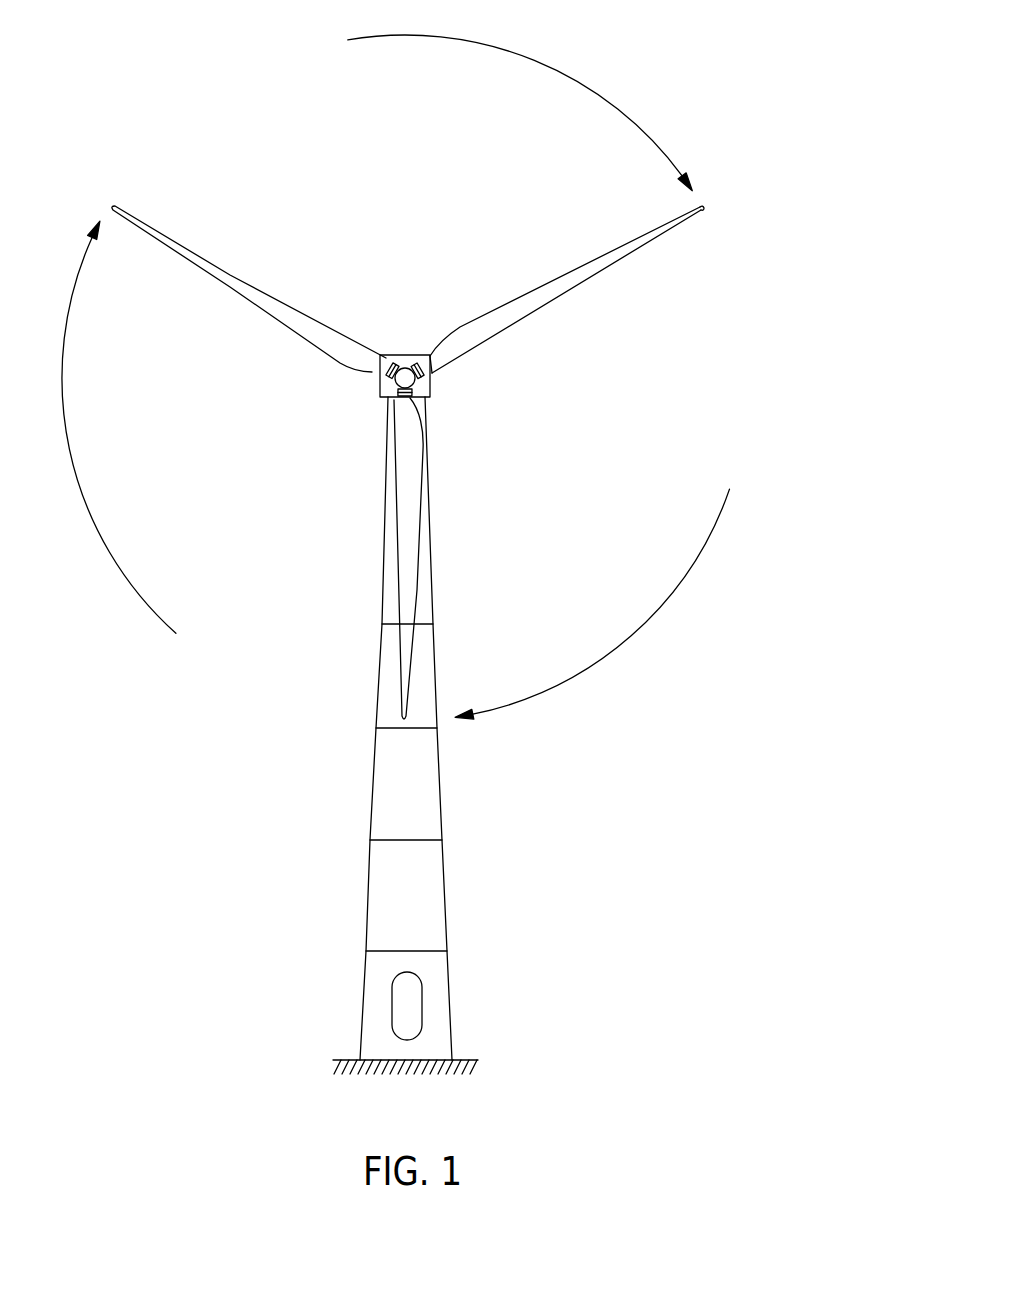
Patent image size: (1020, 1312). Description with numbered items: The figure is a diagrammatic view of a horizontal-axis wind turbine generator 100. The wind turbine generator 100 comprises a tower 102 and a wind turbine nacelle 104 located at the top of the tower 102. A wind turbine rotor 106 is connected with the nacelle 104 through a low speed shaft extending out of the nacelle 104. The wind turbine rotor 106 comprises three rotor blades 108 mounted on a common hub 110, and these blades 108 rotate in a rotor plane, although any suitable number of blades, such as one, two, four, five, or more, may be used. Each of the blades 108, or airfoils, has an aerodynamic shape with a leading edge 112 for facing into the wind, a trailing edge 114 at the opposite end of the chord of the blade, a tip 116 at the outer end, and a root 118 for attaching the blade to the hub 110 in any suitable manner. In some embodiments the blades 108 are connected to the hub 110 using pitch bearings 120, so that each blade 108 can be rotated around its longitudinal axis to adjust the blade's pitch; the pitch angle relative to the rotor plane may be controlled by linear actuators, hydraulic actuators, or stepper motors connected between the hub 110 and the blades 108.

The wind turbine generator 100 is at (328, 908).
The tower 102 is at (425, 790).
The wind turbine nacelle 104 is at (432, 398).
The wind turbine rotor 106 is at (342, 398).
The rotor blades 108 is at (219, 281).
The hub 110 is at (400, 368).
The leading edge 112 is at (585, 282).
The trailing edge 114 is at (607, 252).
The tip 116 is at (712, 196).
The root 118 is at (464, 381).
The pitch bearings 120 is at (390, 365).